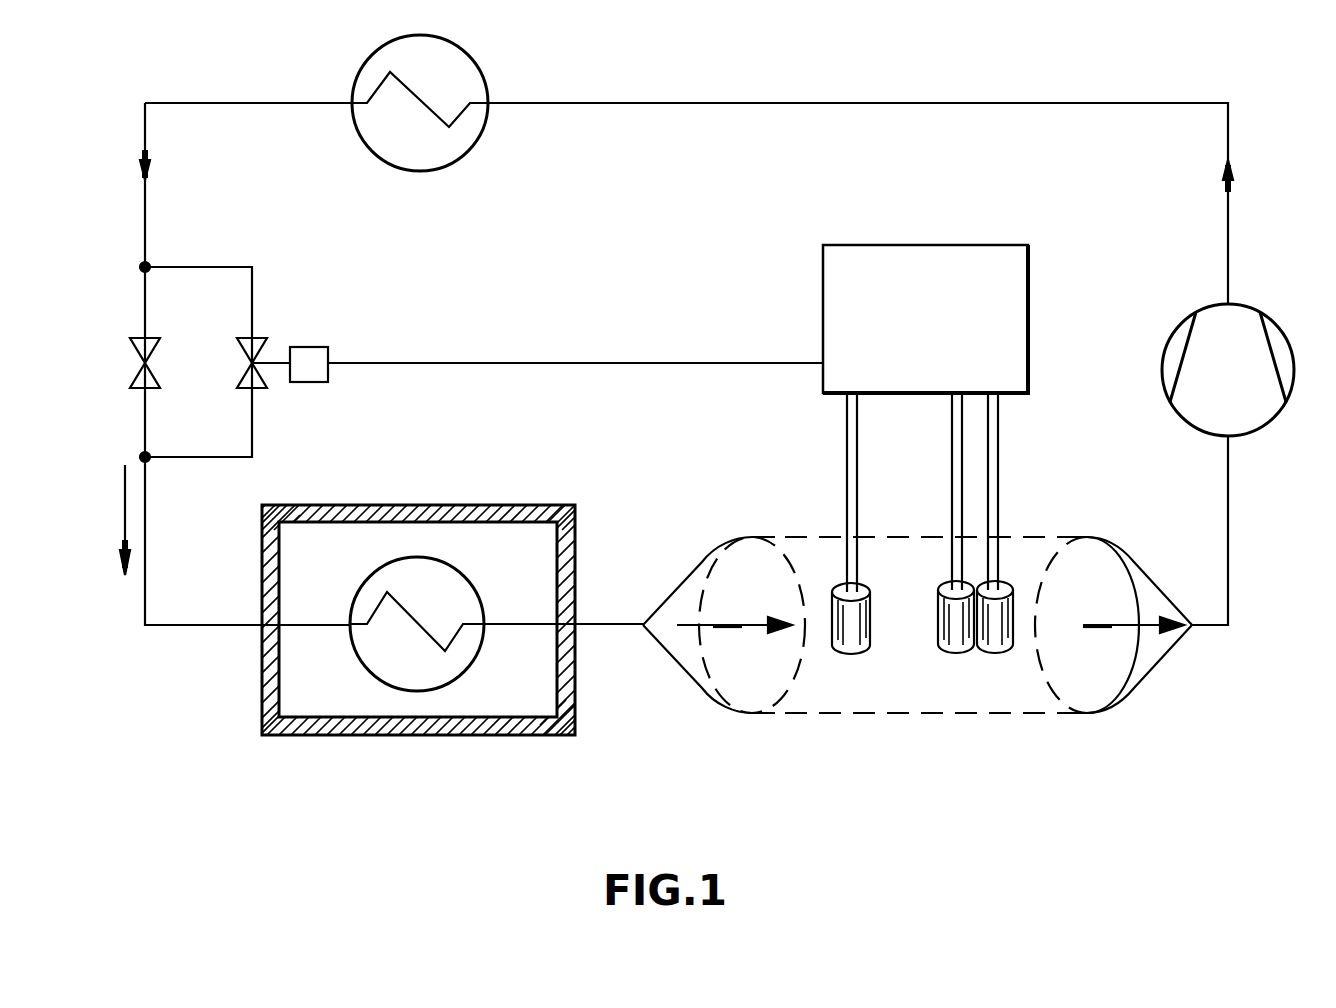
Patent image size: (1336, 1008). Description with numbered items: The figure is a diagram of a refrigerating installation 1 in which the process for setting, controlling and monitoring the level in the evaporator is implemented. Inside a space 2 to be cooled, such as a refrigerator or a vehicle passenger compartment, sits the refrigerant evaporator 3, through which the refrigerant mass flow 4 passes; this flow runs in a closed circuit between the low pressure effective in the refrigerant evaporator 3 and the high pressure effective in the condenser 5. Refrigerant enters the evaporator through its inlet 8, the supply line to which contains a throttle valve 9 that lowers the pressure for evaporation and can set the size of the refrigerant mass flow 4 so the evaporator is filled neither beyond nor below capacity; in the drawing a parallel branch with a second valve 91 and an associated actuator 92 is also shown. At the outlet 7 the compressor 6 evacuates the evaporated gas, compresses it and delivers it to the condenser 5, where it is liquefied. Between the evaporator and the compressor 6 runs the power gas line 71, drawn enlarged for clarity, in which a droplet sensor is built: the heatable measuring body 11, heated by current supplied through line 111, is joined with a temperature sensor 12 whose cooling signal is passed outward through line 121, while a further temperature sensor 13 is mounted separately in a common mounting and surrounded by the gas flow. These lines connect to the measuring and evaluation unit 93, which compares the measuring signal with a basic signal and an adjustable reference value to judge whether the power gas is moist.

The refrigerating installation 1 is at (94, 687).
The space to be cooled 2 is at (338, 693).
The refrigerant evaporator 3 is at (425, 575).
The refrigerant mass flow 4 is at (125, 515).
The condenser 5 is at (470, 50).
The compressor 6 is at (1275, 335).
The outlet of the refrigerant evaporator 7 is at (522, 626).
The inlet of the refrigerant evaporator 8 is at (318, 627).
The throttle valve 9 is at (130, 352).
The bypass valve 91 is at (247, 350).
The valve actuator 92 is at (310, 360).
The measuring and evaluation unit 93 is at (997, 300).
The heatable measuring body 11 is at (958, 645).
The temperature sensor 12 is at (997, 645).
The further temperature sensor 13 is at (853, 645).
The line 111 is at (963, 478).
The line 121 is at (998, 463).
The power gas line 71 is at (815, 690).